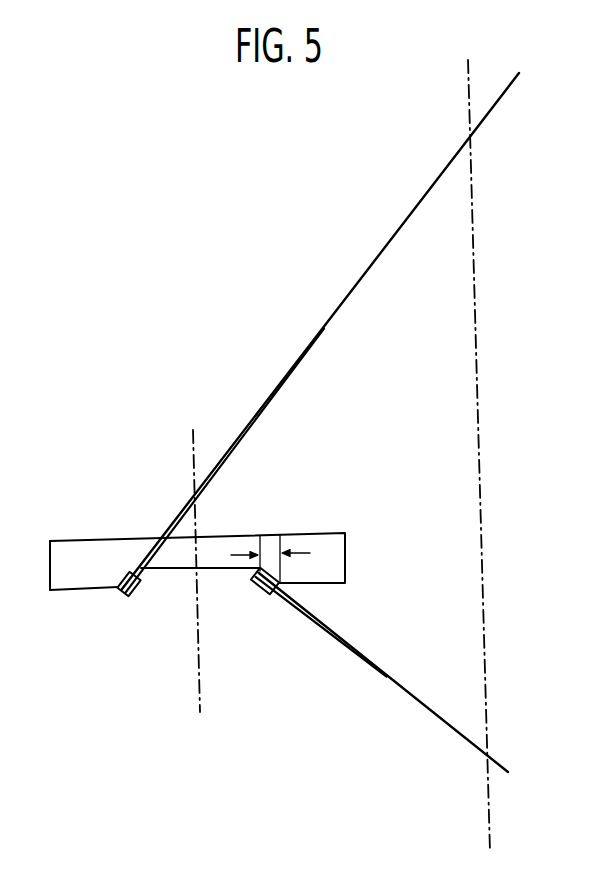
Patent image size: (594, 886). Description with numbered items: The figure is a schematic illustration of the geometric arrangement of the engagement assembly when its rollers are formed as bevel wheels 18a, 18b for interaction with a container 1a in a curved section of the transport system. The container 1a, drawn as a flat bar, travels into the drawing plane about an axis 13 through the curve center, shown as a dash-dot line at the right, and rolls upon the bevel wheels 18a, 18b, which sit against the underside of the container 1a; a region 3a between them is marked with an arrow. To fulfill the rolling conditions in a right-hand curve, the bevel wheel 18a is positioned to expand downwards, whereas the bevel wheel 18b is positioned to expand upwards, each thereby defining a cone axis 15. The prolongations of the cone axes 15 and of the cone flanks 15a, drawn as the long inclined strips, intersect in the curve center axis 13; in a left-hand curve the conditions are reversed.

The container 1a is at (335, 527).
The recess 3a is at (215, 574).
The axis 13 is at (480, 419).
The cone axes 15 is at (228, 462).
The cone flanks 15a is at (233, 438).
The bevel wheel 18a is at (133, 598).
The bevel wheel 18b is at (258, 598).